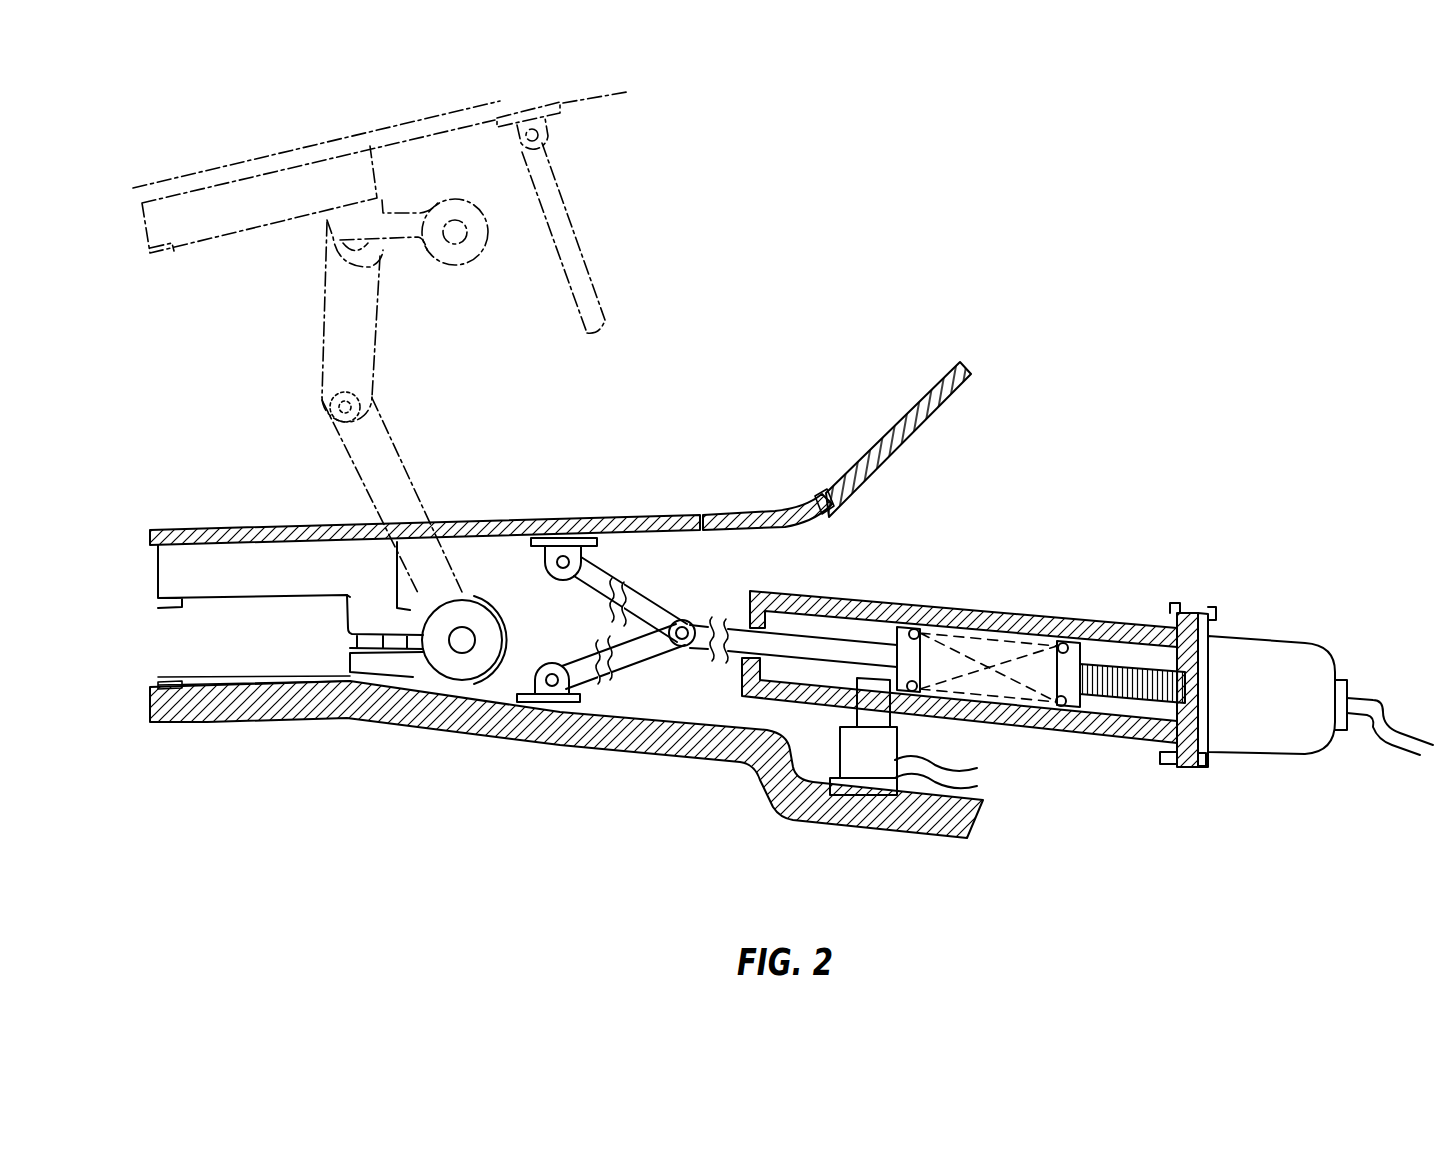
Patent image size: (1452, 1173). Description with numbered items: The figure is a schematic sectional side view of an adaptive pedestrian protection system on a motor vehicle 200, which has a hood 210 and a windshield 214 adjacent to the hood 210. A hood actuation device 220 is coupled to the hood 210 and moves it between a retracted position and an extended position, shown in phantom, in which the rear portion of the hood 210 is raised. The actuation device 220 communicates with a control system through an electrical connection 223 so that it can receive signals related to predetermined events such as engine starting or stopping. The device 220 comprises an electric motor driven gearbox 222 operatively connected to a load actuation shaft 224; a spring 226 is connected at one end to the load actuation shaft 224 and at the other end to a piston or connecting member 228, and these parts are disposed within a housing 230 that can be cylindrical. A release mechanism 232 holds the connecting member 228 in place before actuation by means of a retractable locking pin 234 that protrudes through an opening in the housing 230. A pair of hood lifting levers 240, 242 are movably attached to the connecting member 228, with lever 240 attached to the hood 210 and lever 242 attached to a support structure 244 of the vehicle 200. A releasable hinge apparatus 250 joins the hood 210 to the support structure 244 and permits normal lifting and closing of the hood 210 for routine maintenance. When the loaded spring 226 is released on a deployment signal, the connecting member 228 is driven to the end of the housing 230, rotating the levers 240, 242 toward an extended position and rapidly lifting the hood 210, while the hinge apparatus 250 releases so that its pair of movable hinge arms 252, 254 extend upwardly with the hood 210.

The motor vehicle 200 is at (777, 300).
The hood 210 is at (262, 152).
The windshield 214 is at (945, 375).
The hood actuation device 220 is at (1054, 668).
The electric motor driven gearbox 222 is at (1292, 665).
The electrical connection 223 is at (1382, 743).
The load actuation shaft 224 is at (1132, 697).
The spring 226 is at (968, 620).
The connecting member 228 is at (865, 643).
The housing 230 is at (843, 580).
The release mechanism 232 is at (843, 763).
The retractable locking pin 234 is at (873, 713).
The hood lifting lever 240 is at (563, 213).
The hood lifting lever 242 is at (640, 655).
The support structure 244 is at (590, 735).
The releasable hinge apparatus 250 is at (312, 330).
The movable hinge arm 252 is at (363, 340).
The movable hinge arm 254 is at (385, 458).